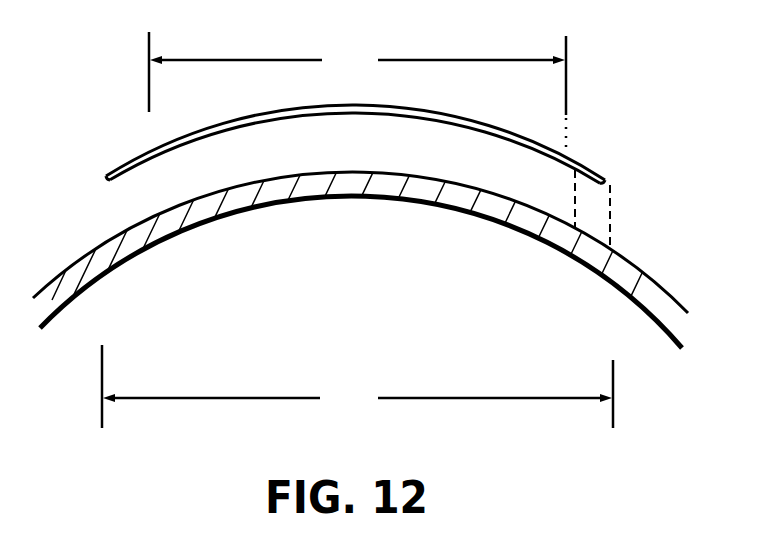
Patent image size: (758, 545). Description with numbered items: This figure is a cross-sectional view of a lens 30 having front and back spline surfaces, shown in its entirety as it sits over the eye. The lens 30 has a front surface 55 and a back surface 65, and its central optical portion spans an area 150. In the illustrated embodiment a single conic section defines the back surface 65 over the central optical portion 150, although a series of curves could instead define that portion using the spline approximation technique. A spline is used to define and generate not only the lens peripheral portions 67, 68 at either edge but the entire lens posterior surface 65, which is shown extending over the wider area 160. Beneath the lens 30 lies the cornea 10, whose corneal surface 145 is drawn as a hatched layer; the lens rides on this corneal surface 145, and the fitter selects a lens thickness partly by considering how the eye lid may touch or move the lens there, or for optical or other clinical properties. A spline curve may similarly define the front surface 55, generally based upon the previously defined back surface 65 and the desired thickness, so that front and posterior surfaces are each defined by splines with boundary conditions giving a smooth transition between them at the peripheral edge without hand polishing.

The cornea 10 is at (95, 280).
The lens 30 is at (466, 117).
The front surface 55 is at (594, 152).
The back surface 65 is at (333, 120).
The lens peripheral portion 67 is at (148, 171).
The lens peripheral portion 68 is at (597, 198).
The corneal surface 145 is at (641, 270).
The central optical portion area 150 is at (357, 91).
The area of entire posterior surface 160 is at (357, 386).